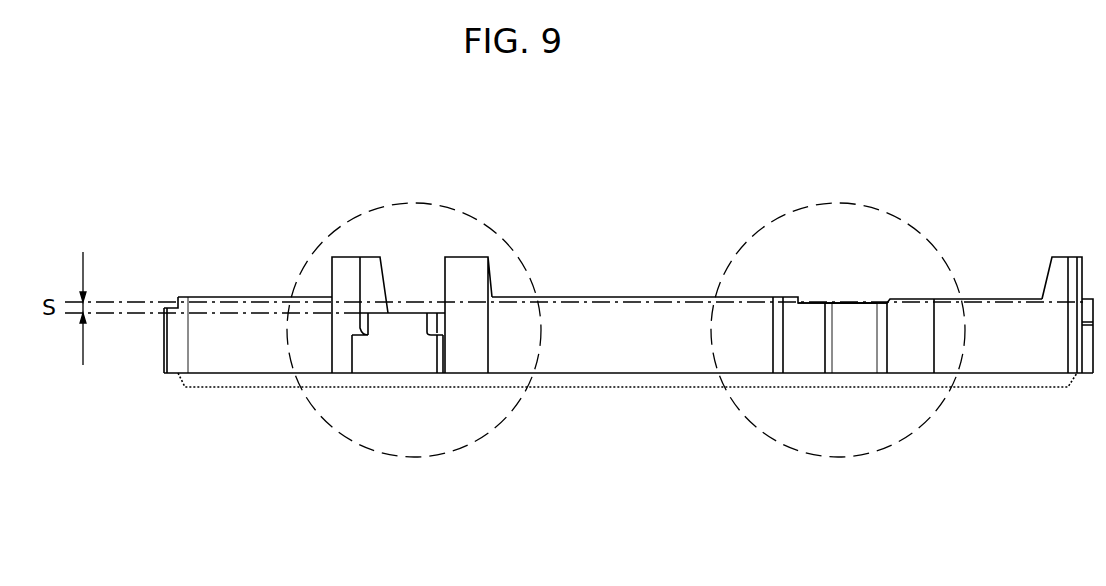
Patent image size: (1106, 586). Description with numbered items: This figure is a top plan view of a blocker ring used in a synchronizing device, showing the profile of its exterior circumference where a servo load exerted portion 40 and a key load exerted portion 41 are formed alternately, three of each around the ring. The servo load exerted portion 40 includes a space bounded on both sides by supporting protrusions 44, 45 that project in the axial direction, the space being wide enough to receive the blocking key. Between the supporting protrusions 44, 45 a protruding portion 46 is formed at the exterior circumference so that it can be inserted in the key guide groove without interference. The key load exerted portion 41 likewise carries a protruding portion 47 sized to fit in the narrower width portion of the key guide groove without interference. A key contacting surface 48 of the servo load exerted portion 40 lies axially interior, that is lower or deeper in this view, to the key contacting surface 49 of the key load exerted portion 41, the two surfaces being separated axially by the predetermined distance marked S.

The servo load exerted portion 40 is at (415, 458).
The key load exerted portion 41 is at (840, 458).
The supporting protrusion 44 is at (343, 267).
The supporting protrusion 45 is at (467, 267).
The protruding portion 46 is at (422, 353).
The protruding portion 47 is at (845, 337).
The key contacting surface 48 is at (408, 305).
The key contacting surface 49 is at (859, 292).